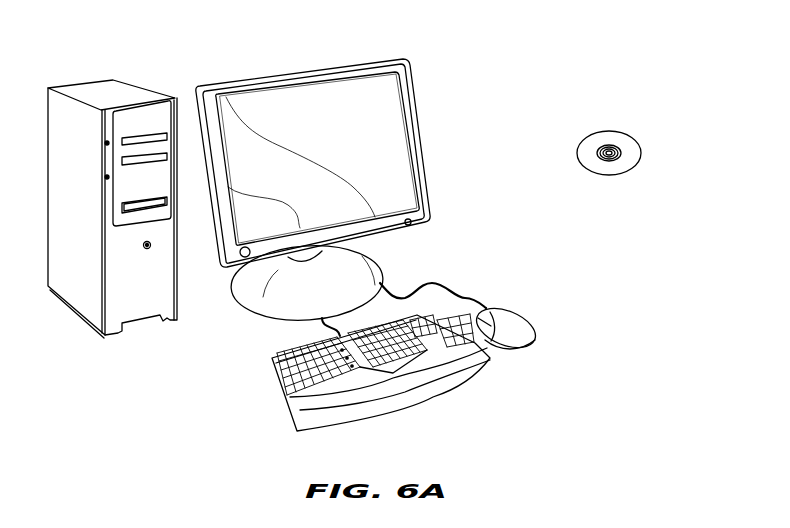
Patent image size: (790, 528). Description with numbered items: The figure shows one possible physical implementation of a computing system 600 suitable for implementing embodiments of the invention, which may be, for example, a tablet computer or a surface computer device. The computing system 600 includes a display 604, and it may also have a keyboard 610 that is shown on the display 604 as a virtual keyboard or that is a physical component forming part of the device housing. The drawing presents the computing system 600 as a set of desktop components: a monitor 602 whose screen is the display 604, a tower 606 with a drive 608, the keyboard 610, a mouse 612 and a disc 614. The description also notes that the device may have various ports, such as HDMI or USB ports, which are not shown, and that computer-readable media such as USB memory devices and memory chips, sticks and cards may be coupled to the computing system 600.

The computing system 600 is at (535, 43).
The monitor 602 is at (424, 160).
The display 604 is at (378, 101).
The computer tower / system unit 606 is at (102, 90).
The disk drive 608 is at (162, 207).
The keyboard 610 is at (280, 402).
The mouse 612 is at (530, 320).
The compact disc / removable storage medium 614 is at (626, 131).